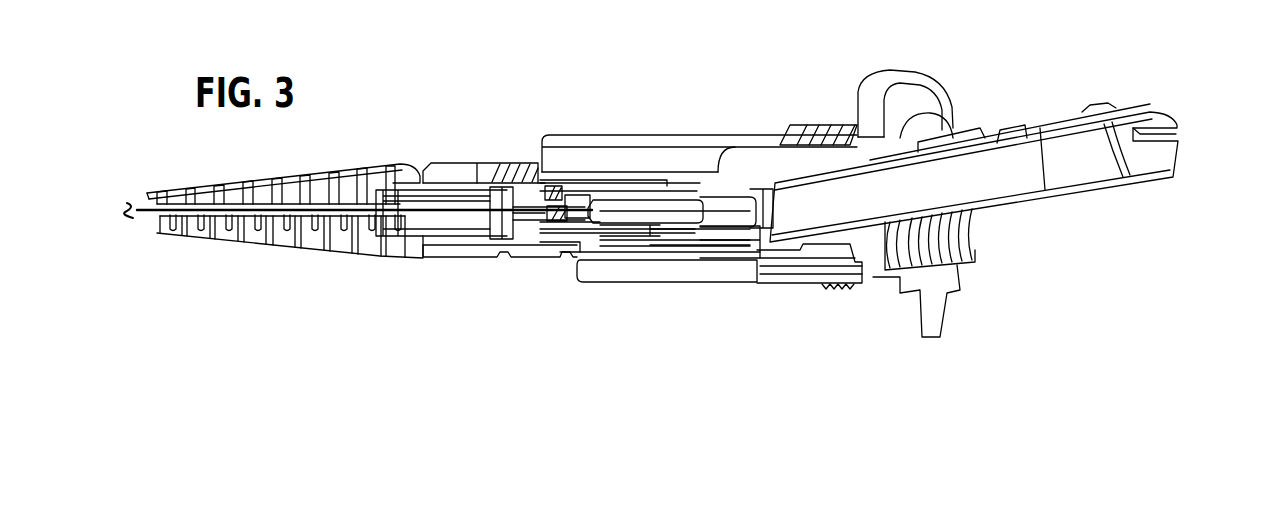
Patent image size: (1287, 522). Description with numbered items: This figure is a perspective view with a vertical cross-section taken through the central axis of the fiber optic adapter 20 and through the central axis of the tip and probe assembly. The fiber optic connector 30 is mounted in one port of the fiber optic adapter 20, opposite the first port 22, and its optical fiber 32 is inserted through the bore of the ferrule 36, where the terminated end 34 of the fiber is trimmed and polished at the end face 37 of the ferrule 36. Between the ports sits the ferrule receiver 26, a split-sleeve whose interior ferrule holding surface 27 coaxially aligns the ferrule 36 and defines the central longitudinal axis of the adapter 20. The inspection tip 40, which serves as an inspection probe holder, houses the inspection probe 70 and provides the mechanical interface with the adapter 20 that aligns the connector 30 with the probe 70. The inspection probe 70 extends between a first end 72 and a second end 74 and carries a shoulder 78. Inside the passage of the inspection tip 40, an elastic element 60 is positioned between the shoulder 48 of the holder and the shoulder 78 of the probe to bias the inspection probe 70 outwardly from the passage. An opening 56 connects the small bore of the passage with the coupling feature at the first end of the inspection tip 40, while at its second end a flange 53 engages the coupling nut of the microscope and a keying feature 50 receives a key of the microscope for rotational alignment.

The fiber optic adapter 20 is at (601, 131).
The first port 22 is at (923, 250).
The ferrule receiver 26 is at (718, 225).
The interior ferrule holding surface 27 is at (732, 207).
The fiber optic connector 30 is at (408, 266).
The optical fiber 32 is at (424, 216).
The terminated end 34 is at (740, 207).
The end face 37 is at (678, 212).
The ferrule 36 is at (648, 225).
The inspection tip 40 is at (1059, 112).
The shoulder 48 is at (900, 213).
The keying feature 50 is at (1152, 136).
The flange 53 is at (1097, 106).
The opening 56 is at (776, 205).
The elastic element 60 is at (957, 146).
The inspection probe 70 is at (1085, 160).
The first end 72 is at (1123, 160).
The second end 74 is at (768, 215).
The shoulder 78 is at (1003, 142).